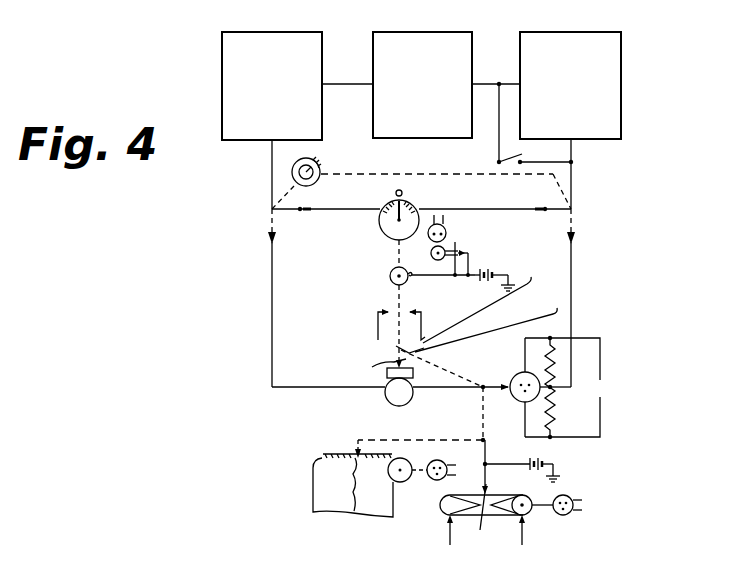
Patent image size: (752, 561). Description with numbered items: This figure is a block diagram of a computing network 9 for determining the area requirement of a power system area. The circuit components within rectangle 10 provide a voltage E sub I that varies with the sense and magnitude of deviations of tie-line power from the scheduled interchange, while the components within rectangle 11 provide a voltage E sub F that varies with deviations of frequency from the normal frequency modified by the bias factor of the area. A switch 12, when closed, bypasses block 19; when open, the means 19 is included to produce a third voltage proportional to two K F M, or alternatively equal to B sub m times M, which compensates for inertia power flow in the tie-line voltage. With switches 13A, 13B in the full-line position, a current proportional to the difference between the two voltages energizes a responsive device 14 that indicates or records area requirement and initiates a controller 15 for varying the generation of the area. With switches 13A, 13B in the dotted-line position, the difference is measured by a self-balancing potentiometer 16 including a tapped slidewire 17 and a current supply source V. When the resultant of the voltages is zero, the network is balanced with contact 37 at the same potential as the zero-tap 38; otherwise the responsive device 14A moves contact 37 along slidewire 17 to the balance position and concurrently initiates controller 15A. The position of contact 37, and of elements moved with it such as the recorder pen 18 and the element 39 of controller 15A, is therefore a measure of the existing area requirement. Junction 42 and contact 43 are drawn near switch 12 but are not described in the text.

The computer network 9 is at (328, 308).
The rectangle 10 is at (278, 32).
The rectangle 11 is at (437, 32).
The switch 12 is at (497, 160).
The switch 13A is at (278, 216).
The switch 13B is at (563, 221).
The responsive device 14 is at (393, 229).
The responsive device 14A is at (396, 394).
The controller 15 is at (495, 307).
The controller 15A is at (585, 549).
The self-balancing potentiometer 16 is at (466, 343).
The slidewire 17 is at (518, 394).
The recorder pen 18 is at (357, 444).
The means for producing voltage E_3 19 is at (621, 48).
The contact 37 is at (490, 390).
The zero-tap 38 is at (552, 390).
The element 39 is at (500, 495).
The junction 42 is at (498, 107).
The switch contact 43 is at (573, 162).